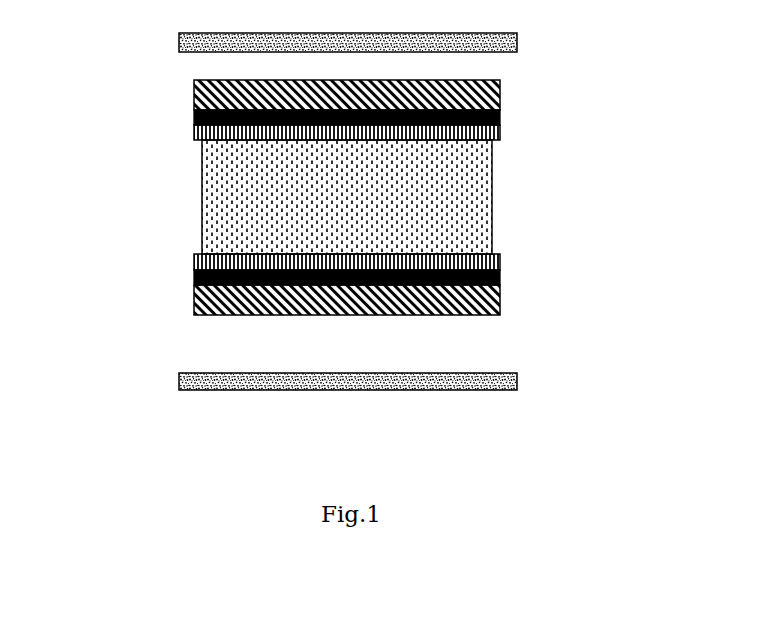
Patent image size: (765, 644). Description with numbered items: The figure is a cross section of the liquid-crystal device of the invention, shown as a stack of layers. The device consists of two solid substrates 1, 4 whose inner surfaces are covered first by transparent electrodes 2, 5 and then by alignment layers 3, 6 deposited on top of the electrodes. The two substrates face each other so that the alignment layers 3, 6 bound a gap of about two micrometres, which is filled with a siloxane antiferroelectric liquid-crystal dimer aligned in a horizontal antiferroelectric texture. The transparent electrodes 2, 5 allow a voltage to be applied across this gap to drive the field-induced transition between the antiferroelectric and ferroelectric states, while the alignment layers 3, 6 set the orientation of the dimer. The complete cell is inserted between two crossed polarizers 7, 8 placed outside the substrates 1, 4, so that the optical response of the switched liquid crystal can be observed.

The solid substrate 1 is at (502, 97).
The transparent electrode 2 is at (194, 119).
The alignment layer 3 is at (502, 133).
The solid substrate 4 is at (502, 298).
The transparent electrode 5 is at (194, 278).
The alignment layer 6 is at (502, 263).
The crossed polarizer 7 is at (179, 43).
The crossed polarizer 8 is at (179, 382).